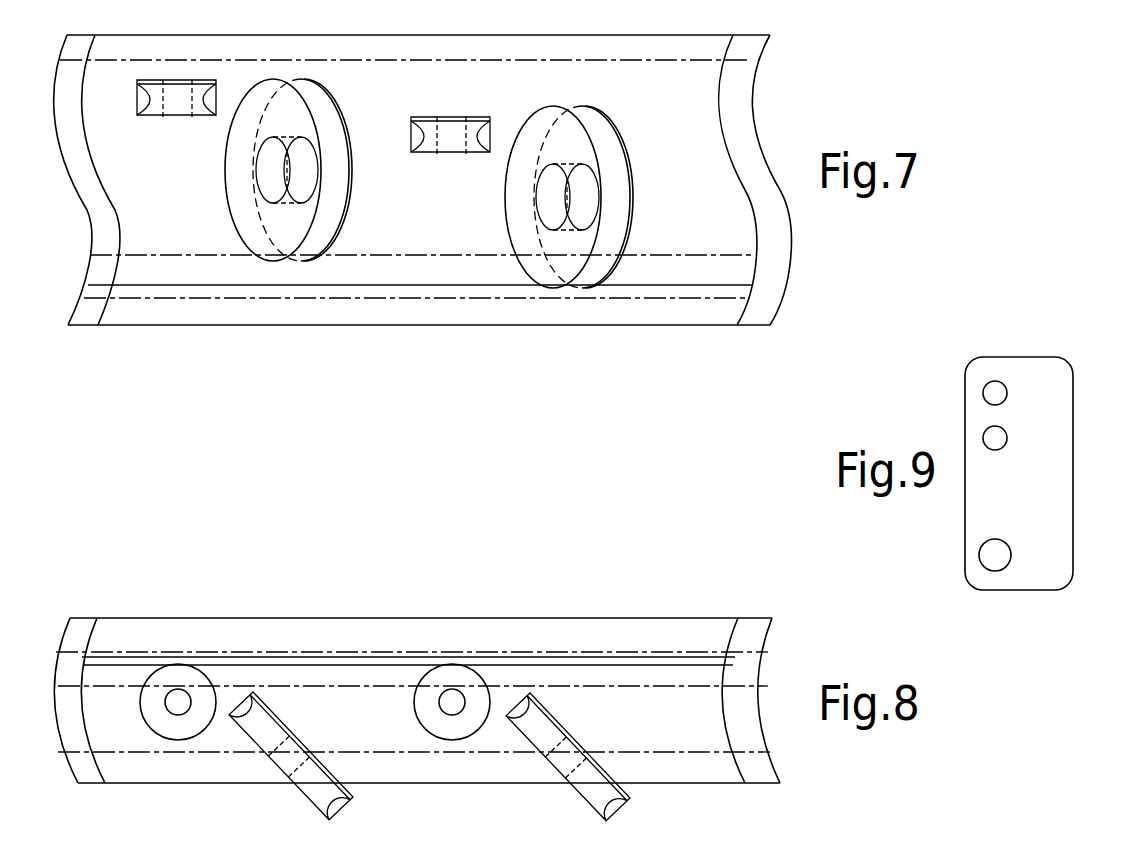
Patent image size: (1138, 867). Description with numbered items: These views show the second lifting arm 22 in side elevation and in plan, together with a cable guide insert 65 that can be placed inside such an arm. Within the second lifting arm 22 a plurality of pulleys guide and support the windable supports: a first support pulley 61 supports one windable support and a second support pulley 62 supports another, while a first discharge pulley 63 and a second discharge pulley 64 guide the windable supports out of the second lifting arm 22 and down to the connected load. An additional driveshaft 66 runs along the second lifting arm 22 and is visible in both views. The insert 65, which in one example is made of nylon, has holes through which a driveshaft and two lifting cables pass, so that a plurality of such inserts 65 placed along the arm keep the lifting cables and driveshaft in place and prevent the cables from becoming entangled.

In FIG. 7, the second lifting arm 22 is at (443, 34).
In FIG. 8, the second lifting arm 22 is at (443, 618).
In FIG. 7, the first support pulley 61 is at (175, 121).
In FIG. 8, the first support pulley 61 is at (141, 703).
In FIG. 7, the second support pulley 62 is at (450, 158).
In FIG. 8, the second support pulley 62 is at (414, 702).
In FIG. 7, the first discharge pulley 63 is at (336, 100).
In FIG. 8, the first discharge pulley 63 is at (308, 802).
In FIG. 7, the second discharge pulley 64 is at (614, 123).
In FIG. 8, the second discharge pulley 64 is at (582, 802).
In FIG. 9, the insert 65 is at (1074, 548).
In FIG. 7, the additional driveshaft 66 is at (414, 300).
In FIG. 8, the additional driveshaft 66 is at (293, 652).